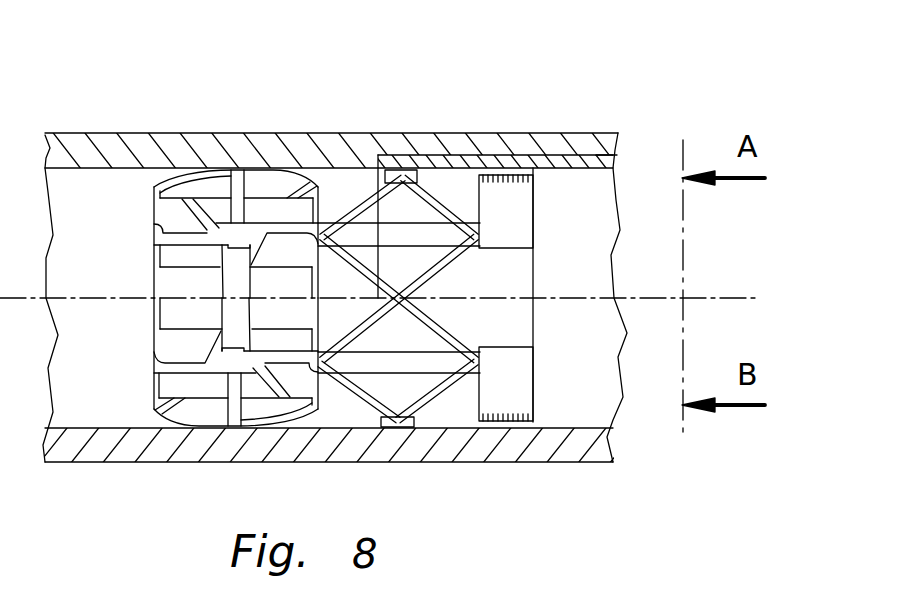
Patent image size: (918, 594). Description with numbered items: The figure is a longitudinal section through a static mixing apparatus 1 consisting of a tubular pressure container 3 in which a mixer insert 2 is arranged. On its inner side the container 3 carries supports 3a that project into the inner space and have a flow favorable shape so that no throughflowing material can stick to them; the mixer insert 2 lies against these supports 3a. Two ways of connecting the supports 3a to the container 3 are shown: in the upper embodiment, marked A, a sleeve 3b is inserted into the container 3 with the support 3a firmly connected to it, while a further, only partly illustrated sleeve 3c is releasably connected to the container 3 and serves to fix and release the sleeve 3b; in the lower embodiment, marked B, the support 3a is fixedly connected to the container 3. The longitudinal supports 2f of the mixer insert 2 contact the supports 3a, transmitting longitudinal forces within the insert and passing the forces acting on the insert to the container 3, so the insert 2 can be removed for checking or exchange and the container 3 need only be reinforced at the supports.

The static mixing apparatus 1 is at (477, 61).
The mixer insert 2 is at (270, 187).
The longitudinal supports 2f is at (360, 230).
The tubular container 3 is at (159, 149).
The supports 3a is at (510, 220).
The sleeve 3b is at (465, 163).
The further sleeve 3c is at (603, 160).